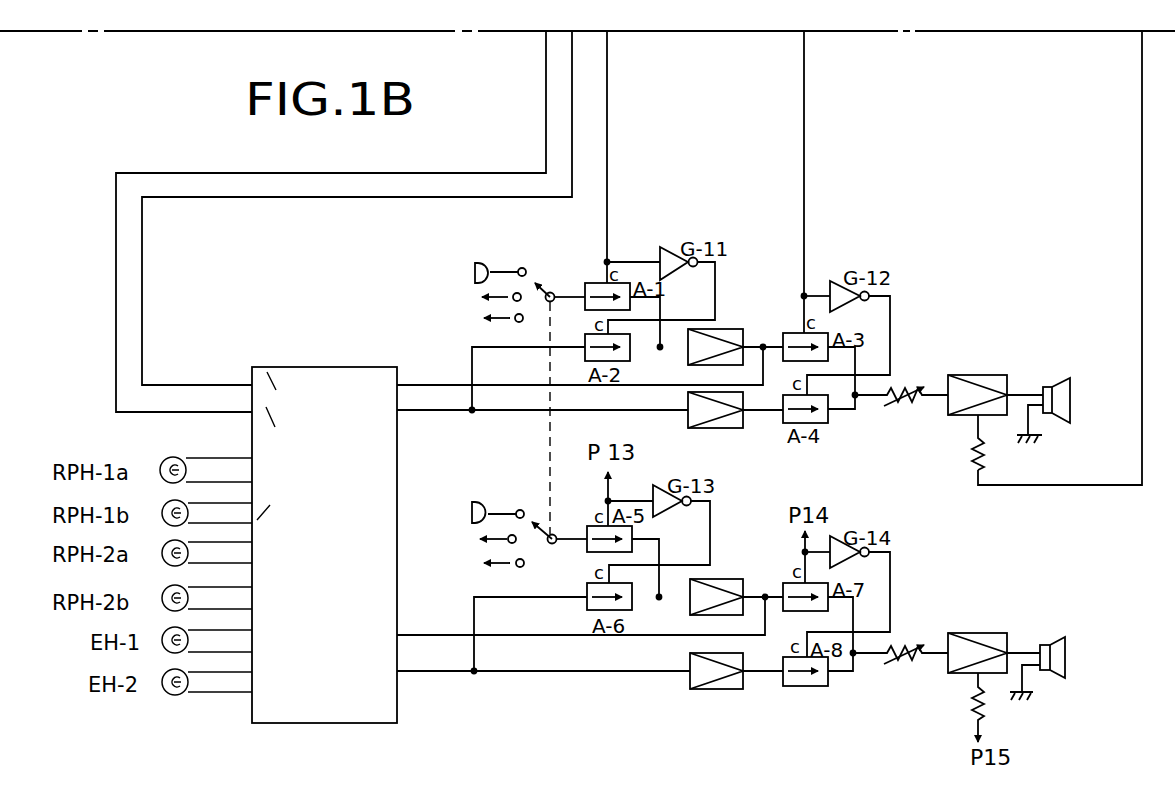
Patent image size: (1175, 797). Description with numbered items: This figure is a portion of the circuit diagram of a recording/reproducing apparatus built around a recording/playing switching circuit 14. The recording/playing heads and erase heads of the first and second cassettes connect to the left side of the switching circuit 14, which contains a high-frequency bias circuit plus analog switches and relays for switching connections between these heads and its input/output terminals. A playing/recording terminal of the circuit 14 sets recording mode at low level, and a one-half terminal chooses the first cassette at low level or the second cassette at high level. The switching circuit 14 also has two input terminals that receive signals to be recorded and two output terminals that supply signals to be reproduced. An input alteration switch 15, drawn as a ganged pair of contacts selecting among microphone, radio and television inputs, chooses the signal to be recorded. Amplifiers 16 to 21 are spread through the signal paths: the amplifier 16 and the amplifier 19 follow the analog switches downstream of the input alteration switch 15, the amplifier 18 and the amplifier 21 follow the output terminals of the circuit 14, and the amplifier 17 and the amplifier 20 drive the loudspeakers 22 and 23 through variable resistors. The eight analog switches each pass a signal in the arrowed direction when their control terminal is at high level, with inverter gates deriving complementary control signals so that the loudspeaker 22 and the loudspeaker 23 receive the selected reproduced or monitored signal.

The recording/playing switching circuit 14 is at (305, 366).
The input alteration switch 15 is at (553, 293).
The amplifier 16 is at (737, 329).
The amplifier 17 is at (978, 375).
The amplifier 18 is at (724, 428).
The amplifier 19 is at (734, 579).
The amplifier 20 is at (985, 635).
The amplifier 21 is at (690, 687).
The loudspeaker 22 is at (1070, 394).
The loudspeaker 23 is at (1065, 656).